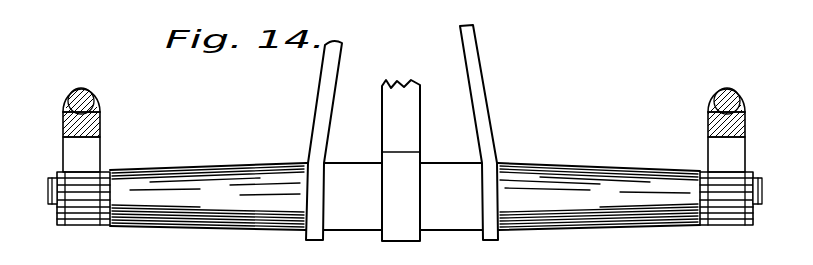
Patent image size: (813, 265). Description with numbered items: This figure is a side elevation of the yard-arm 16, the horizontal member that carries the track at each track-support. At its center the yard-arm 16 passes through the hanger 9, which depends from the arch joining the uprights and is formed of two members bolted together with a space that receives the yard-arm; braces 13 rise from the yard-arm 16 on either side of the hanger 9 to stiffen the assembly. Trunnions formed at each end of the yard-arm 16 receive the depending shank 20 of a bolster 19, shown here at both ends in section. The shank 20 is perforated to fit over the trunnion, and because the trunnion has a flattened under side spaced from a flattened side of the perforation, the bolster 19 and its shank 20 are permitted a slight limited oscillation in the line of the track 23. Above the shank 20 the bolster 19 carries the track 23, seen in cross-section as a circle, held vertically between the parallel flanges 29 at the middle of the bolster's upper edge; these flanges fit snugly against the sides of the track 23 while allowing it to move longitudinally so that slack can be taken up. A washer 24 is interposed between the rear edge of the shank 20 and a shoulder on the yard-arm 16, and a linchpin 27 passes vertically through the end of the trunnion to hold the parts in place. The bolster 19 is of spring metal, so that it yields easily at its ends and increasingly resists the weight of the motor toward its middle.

The hanger 9 is at (413, 100).
The braces 13 is at (333, 58).
The yard-arm 16 is at (612, 222).
The bolster 19 is at (101, 125).
The depending shank 20 is at (72, 153).
The track 23 is at (86, 90).
The washer 24 is at (103, 226).
The linchpin 27 is at (55, 208).
The cap / seat 29 is at (66, 101).